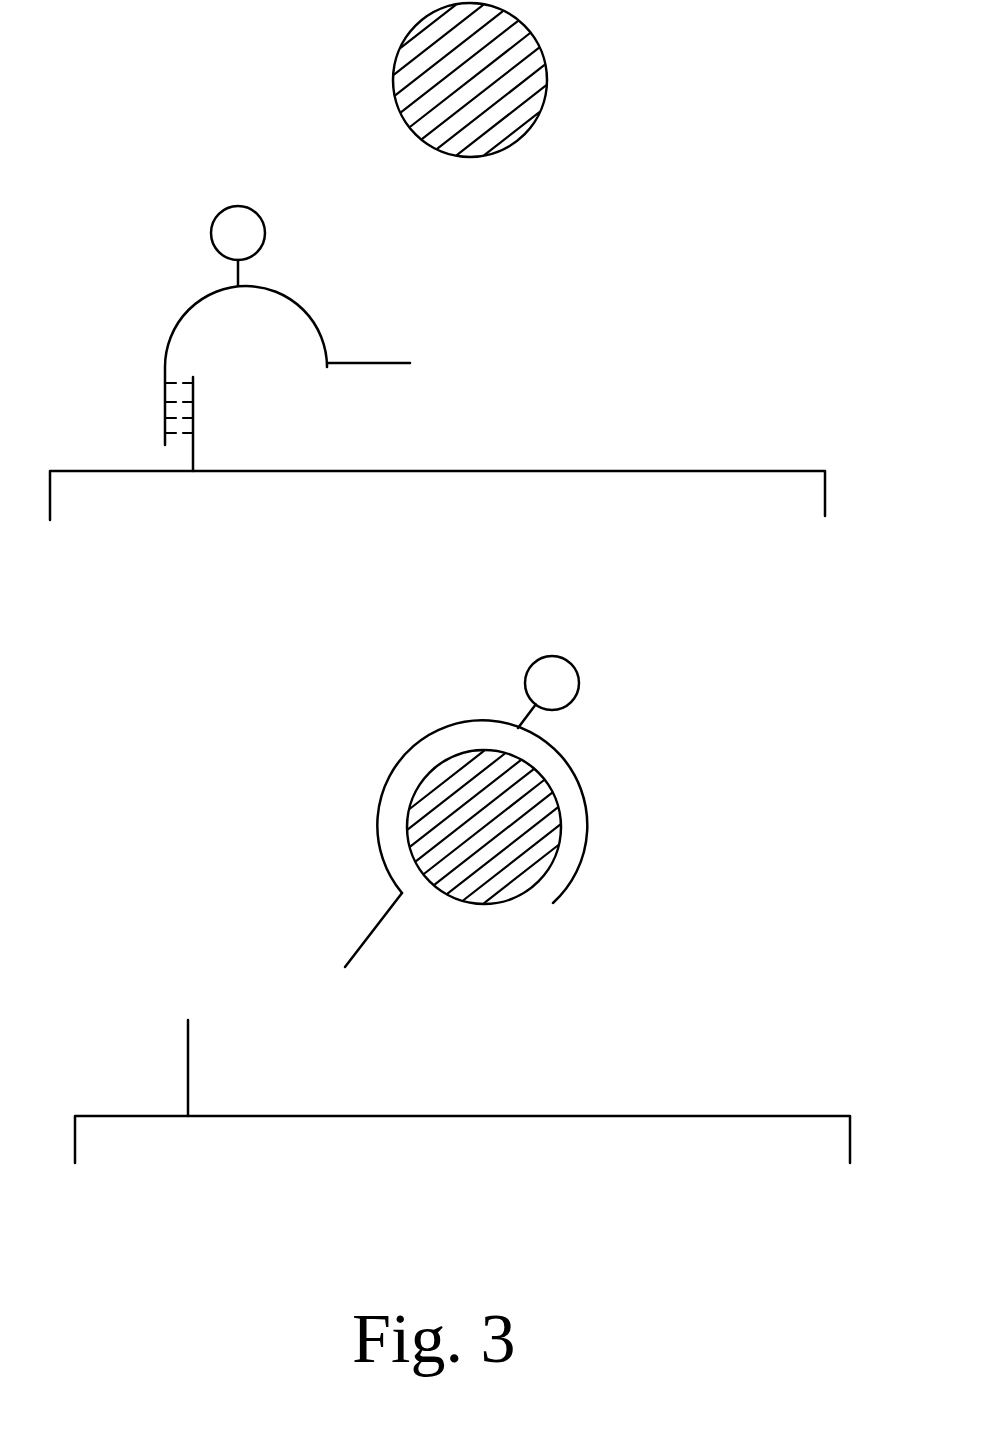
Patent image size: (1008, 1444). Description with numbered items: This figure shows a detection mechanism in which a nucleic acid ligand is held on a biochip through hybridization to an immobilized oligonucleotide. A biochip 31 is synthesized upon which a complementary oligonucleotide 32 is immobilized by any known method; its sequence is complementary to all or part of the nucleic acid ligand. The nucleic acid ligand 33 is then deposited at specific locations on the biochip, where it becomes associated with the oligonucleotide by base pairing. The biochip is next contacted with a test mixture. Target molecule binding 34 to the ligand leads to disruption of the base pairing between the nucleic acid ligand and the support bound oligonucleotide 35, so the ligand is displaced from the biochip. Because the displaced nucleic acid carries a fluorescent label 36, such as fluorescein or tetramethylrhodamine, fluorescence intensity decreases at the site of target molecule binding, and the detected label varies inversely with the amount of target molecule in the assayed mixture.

The biochip 31 is at (476, 493).
The complementary oligonucleotide 32 is at (202, 424).
The nucleic acid ligand 33 is at (287, 325).
The target molecule binding 34 is at (509, 80).
The support bound oligonucleotide 35 is at (521, 859).
The label 36 is at (487, 811).